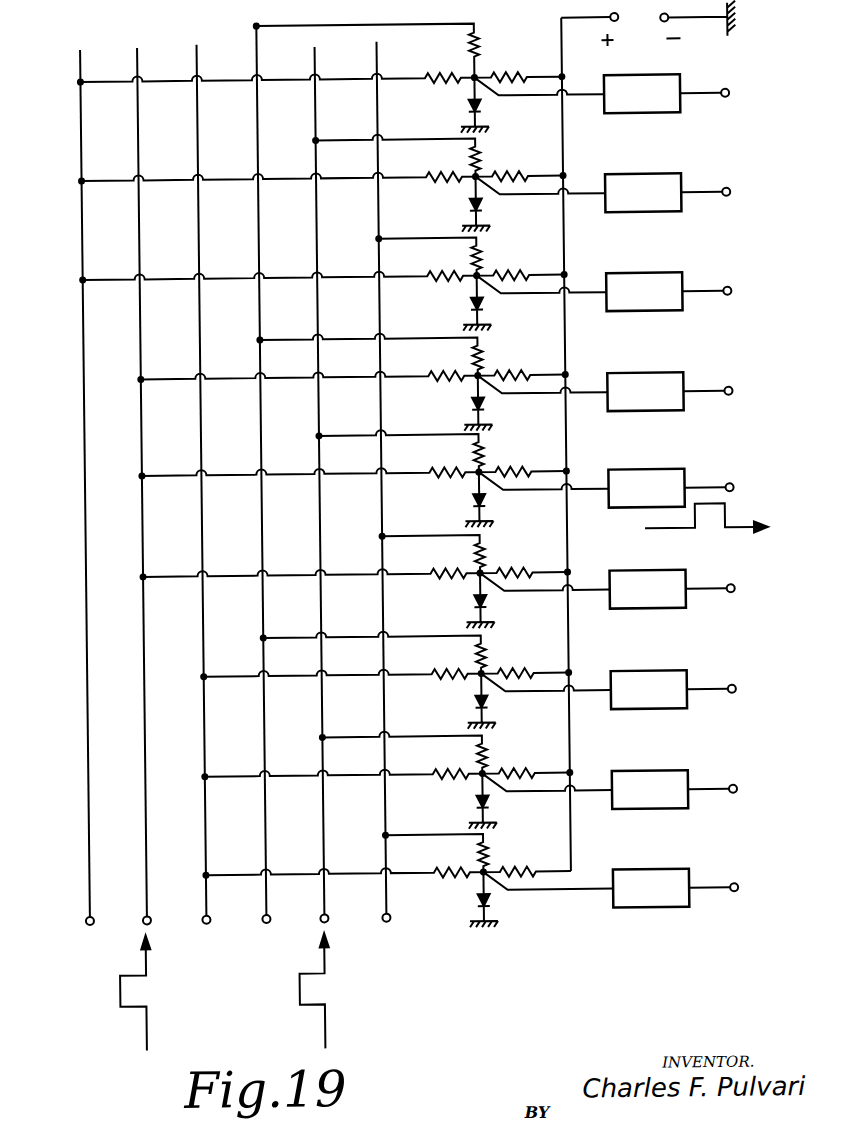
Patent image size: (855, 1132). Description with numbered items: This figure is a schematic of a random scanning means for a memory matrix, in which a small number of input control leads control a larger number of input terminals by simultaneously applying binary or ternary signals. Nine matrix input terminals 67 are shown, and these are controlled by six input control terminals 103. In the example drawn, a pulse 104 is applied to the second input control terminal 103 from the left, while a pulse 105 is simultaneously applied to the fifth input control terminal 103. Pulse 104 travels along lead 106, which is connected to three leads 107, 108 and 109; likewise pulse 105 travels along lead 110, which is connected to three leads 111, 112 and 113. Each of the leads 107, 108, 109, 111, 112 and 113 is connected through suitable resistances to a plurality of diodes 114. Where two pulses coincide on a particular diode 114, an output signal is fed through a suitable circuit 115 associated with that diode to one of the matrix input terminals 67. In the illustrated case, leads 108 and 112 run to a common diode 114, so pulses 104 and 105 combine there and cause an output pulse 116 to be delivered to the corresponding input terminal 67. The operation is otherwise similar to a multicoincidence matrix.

The matrix input terminal 67 is at (717, 115).
The input control terminal 103 is at (196, 927).
The pulse 104 is at (131, 1012).
The pulse 105 is at (307, 1014).
The lead 106 is at (135, 729).
The lead 107 is at (161, 386).
The lead 108 is at (352, 492).
The lead 109 is at (160, 584).
The lead 110 is at (313, 822).
The lead 111 is at (336, 150).
The lead 112 is at (333, 447).
The lead 113 is at (336, 744).
The diode 114 is at (472, 498).
The circuit 115 is at (622, 517).
The output pulse 116 is at (698, 537).